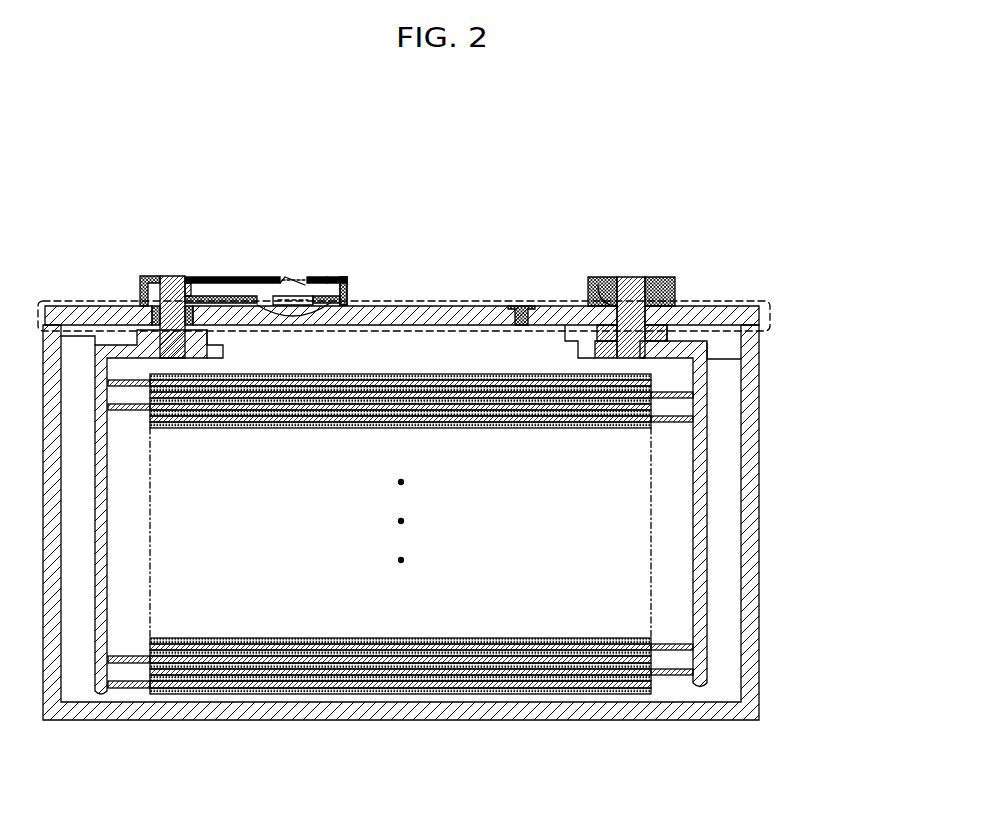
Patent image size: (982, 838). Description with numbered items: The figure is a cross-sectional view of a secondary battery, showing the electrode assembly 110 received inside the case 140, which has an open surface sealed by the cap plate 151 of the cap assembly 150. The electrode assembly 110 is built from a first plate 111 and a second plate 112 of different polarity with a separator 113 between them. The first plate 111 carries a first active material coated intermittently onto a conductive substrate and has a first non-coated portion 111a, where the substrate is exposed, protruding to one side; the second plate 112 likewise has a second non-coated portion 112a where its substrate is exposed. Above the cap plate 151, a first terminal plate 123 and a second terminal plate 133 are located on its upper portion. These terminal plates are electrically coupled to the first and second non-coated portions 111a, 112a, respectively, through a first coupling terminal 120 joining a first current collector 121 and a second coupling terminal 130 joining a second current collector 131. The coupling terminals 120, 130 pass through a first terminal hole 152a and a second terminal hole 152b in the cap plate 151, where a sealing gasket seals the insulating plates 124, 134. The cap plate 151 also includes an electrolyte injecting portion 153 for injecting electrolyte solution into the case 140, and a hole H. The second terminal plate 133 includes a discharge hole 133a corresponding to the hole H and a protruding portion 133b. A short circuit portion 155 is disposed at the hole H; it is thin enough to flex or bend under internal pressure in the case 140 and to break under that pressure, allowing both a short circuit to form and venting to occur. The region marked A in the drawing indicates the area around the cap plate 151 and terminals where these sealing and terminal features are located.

The region A is at (50, 300).
The hole H is at (280, 280).
The electrode assembly 110 is at (397, 584).
The first plate 111 is at (583, 675).
The first non-coated portion 111a is at (678, 675).
The second plate 112 is at (233, 686).
The second non-coated portion 112a is at (128, 688).
The separator 113 is at (410, 672).
The first coupling terminal 120 is at (633, 282).
The first current collector 121 is at (705, 380).
The first terminal plate 123 is at (666, 278).
The insulating plate 124 is at (733, 340).
The second coupling terminal 130 is at (166, 276).
The second current collector 131 is at (110, 348).
The second terminal plate 133 is at (235, 296).
The discharge hole 133a is at (292, 278).
The protruding portion 133b is at (290, 305).
The insulating plate 134 is at (224, 340).
The case 140 is at (752, 527).
The cap assembly 150 is at (348, 222).
The cap plate 151 is at (370, 318).
The first terminal hole 152a is at (603, 300).
The second terminal hole 152b is at (150, 310).
The electrolyte injecting portion 153 is at (522, 306).
The short circuit portion 155 is at (338, 278).